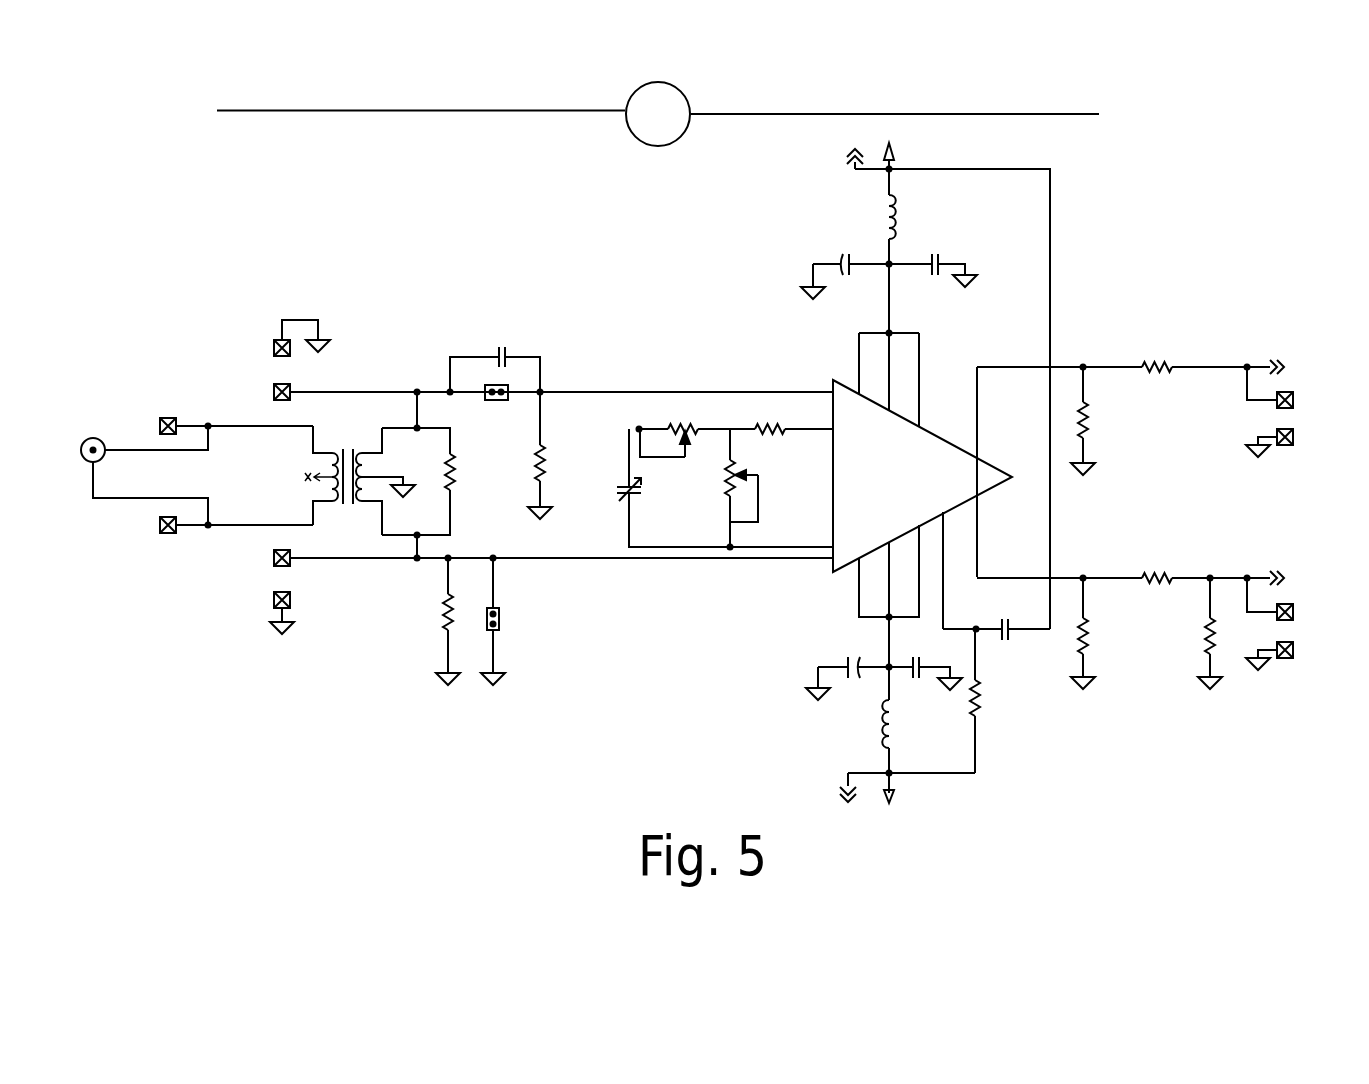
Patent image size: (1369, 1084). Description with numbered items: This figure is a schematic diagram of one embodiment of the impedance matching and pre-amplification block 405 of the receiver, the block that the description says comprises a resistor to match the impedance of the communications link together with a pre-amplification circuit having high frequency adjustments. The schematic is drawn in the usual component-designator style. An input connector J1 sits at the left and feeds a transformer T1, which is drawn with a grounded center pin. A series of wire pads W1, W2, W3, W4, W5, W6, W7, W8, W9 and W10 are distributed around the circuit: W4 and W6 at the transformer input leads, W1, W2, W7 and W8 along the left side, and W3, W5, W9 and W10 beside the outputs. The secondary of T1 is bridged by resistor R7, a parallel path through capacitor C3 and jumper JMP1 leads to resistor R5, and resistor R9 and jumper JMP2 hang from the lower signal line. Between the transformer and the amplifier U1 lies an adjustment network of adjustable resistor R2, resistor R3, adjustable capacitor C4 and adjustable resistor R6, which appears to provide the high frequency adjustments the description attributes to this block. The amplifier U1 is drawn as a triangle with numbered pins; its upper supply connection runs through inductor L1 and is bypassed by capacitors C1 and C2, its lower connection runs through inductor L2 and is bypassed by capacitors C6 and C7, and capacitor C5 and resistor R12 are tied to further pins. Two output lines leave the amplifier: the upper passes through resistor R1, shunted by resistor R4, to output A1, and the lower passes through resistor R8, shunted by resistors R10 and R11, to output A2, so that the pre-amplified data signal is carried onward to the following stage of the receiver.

The impedance matching and pre-amplification block 405 is at (641, 128).
The input connector J1 is at (138, 473).
The wire jumper pad W1 is at (289, 338).
The wire jumper pad W2 is at (540, 392).
The wire jumper pad W3 is at (1284, 388).
The wire jumper pad W4 is at (235, 415).
The wire jumper pad W5 is at (1283, 443).
The wire jumper pad W6 is at (235, 537).
The wire jumper pad W7 is at (540, 558).
The wire jumper pad W8 is at (271, 613).
The wire jumper pad W9 is at (1284, 599).
The wire jumper pad W10 is at (1288, 656).
The transformer T1 is at (355, 479).
The resistor R1 is at (1114, 358).
The potentiometer R2 is at (682, 443).
The resistor R3 is at (781, 431).
The resistor R4 is at (1087, 421).
The resistor R5 is at (547, 455).
The potentiometer R6 is at (733, 488).
The resistor R7 is at (430, 475).
The resistor R8 is at (1114, 569).
The resistor R9 is at (440, 621).
The resistor R10 is at (1092, 633).
The resistor R11 is at (1220, 633).
The resistor R12 is at (987, 701).
The capacitor C1 is at (847, 264).
The capacitor C2 is at (933, 258).
The capacitor C3 is at (495, 358).
The variable capacitor C4 is at (724, 490).
The capacitor C5 is at (996, 636).
The capacitor C6 is at (849, 674).
The capacitor C7 is at (925, 674).
The inductor L1 is at (948, 386).
The inductor L2 is at (907, 710).
The jumper JMP1 is at (496, 396).
The jumper JMP2 is at (510, 621).
The amplifier integrated circuit U1 is at (916, 480).
The output port A1 is at (1277, 368).
The output port A2 is at (1276, 579).